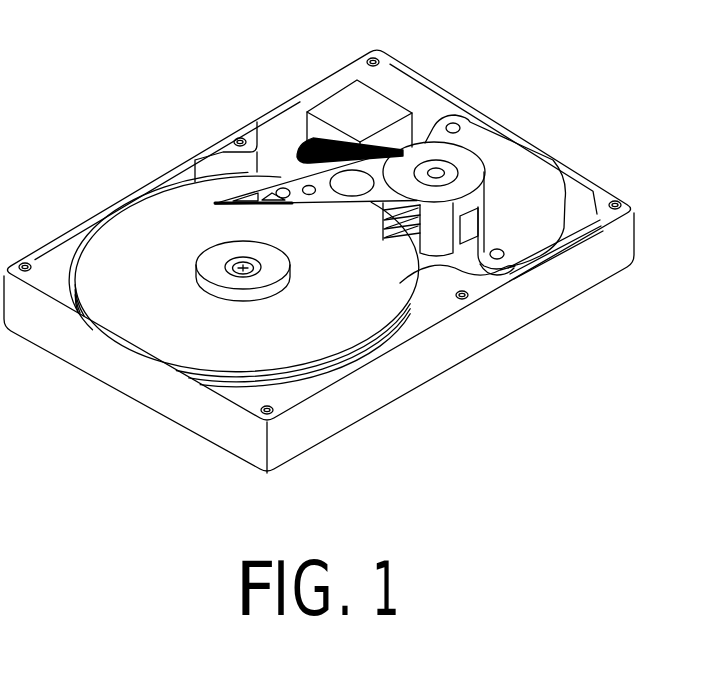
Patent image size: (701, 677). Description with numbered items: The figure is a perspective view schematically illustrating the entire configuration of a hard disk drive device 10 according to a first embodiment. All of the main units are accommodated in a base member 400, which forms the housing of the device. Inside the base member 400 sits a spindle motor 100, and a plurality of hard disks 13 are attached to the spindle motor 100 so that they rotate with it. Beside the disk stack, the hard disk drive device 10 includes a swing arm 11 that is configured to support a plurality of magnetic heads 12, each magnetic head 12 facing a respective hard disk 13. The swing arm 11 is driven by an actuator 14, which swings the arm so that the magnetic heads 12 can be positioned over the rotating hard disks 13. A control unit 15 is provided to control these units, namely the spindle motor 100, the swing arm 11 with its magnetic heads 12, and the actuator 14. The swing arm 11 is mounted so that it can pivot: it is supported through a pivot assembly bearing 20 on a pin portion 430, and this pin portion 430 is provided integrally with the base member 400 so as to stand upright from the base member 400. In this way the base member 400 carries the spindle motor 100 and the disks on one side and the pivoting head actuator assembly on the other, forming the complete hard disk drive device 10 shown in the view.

The hard disk drive device 10 is at (89, 131).
The swing arm 11 is at (322, 192).
The magnetic head 12 is at (235, 197).
The hard disk 13 is at (137, 318).
The actuator 14 is at (517, 173).
The control unit 15 is at (377, 110).
The pivot assembly bearing 20 is at (462, 176).
The spindle motor 100 is at (216, 272).
The base member 400 is at (455, 347).
The pin portion 430 is at (440, 172).